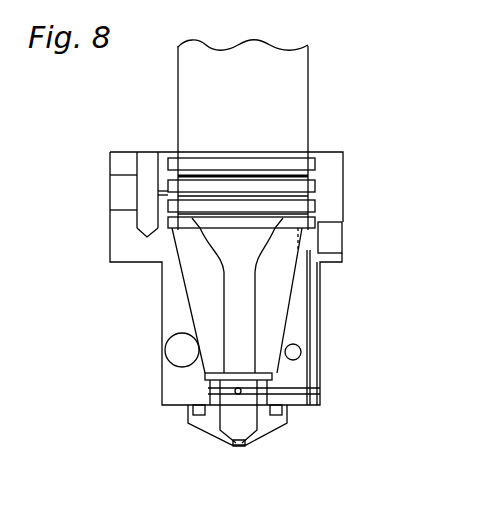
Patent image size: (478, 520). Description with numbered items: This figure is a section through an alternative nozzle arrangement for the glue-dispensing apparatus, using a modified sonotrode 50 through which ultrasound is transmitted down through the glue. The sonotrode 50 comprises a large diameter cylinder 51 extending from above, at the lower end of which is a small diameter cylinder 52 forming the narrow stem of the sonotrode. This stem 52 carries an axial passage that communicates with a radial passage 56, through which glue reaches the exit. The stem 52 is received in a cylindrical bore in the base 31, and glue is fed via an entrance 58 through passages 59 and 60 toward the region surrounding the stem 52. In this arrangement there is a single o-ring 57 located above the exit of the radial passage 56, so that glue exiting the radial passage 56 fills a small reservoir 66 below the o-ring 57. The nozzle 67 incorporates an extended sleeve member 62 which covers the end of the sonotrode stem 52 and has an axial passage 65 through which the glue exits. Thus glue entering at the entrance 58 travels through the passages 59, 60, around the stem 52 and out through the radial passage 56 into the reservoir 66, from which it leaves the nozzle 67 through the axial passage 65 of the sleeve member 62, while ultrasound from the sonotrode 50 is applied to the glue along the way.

The modified sonotrode 50 is at (310, 73).
The large diameter cylinder 51 is at (308, 118).
The entrance 58 is at (343, 242).
The base 31 is at (322, 295).
The passage 59 is at (313, 317).
The small diameter cylinder 52 is at (225, 300).
The o-ring 57 is at (210, 377).
The passage 60 is at (295, 385).
The radial passage 56 is at (240, 390).
The extended sleeve member 62 is at (200, 425).
The small reservoir 66 is at (233, 423).
The axial passage 65 is at (239, 435).
The nozzle 67 is at (260, 443).